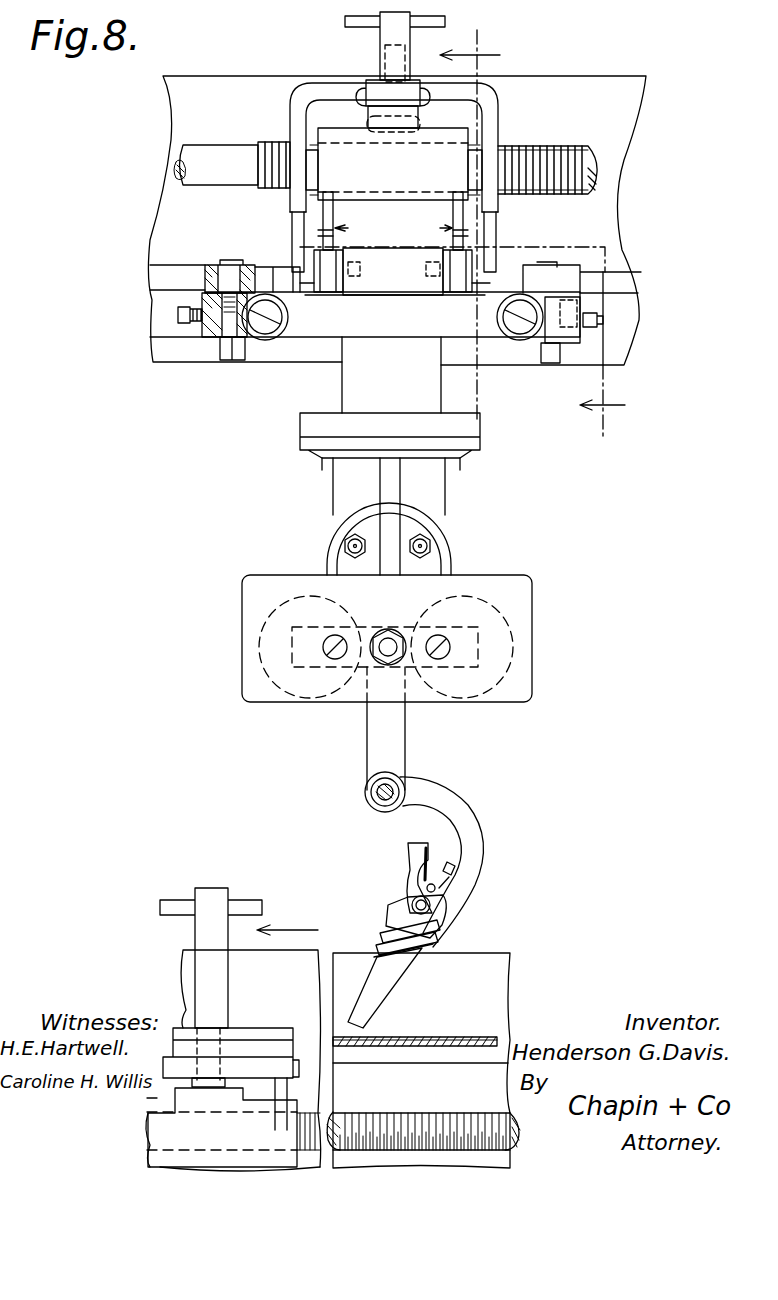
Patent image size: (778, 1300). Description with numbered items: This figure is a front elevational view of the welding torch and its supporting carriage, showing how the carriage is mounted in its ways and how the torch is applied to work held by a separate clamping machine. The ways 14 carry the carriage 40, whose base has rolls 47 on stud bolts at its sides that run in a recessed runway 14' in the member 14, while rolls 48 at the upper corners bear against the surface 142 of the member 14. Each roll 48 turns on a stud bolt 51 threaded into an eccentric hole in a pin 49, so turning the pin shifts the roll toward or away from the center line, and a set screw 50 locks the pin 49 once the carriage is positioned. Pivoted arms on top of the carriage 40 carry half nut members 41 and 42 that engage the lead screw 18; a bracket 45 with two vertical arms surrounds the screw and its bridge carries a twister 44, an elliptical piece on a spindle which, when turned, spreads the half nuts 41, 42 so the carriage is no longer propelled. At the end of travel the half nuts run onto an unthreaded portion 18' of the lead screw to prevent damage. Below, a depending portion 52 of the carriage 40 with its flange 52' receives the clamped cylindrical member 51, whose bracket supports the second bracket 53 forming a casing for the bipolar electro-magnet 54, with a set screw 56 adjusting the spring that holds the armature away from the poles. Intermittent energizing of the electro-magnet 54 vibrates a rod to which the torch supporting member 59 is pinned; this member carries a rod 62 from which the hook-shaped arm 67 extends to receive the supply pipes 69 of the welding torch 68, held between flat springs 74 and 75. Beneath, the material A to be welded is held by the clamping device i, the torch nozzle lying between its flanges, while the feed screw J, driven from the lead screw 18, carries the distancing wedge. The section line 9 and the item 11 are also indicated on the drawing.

The section line 9 is at (532, 230).
The ways 14 is at (416, 220).
The recessed runway 14' is at (653, 318).
The surface 142 is at (620, 283).
The lead screw 18 is at (552, 154).
The unthreaded portion 18' is at (232, 148).
The carriage 40 is at (472, 322).
The half nut member 41 is at (394, 164).
The half nut member 42 is at (335, 222).
The twister 44 is at (372, 98).
The bracket 45 is at (497, 113).
The rolls 47 is at (297, 340).
The rolls 48 is at (218, 267).
The pin 49 is at (233, 332).
The set screw 50 is at (178, 314).
The stud bolt / cylindrical member 51 is at (232, 278).
The depending portion 52 is at (441, 389).
The flange 52' is at (356, 435).
The second bracket 53 is at (532, 625).
The bipolar electro-magnet 54 is at (513, 662).
The set screw 56 is at (402, 666).
The torch supporting member 59 is at (372, 742).
The rod 62 is at (403, 781).
The arm 67 is at (474, 835).
The welding torch 68 is at (430, 933).
The supply pipes 69 is at (437, 911).
The flat spring 74 is at (414, 878).
The flat spring 75 is at (452, 876).
The clamping device i is at (488, 976).
The material to be welded A is at (495, 1040).
The feed screw J is at (518, 1135).
The press member 11 is at (243, 1070).